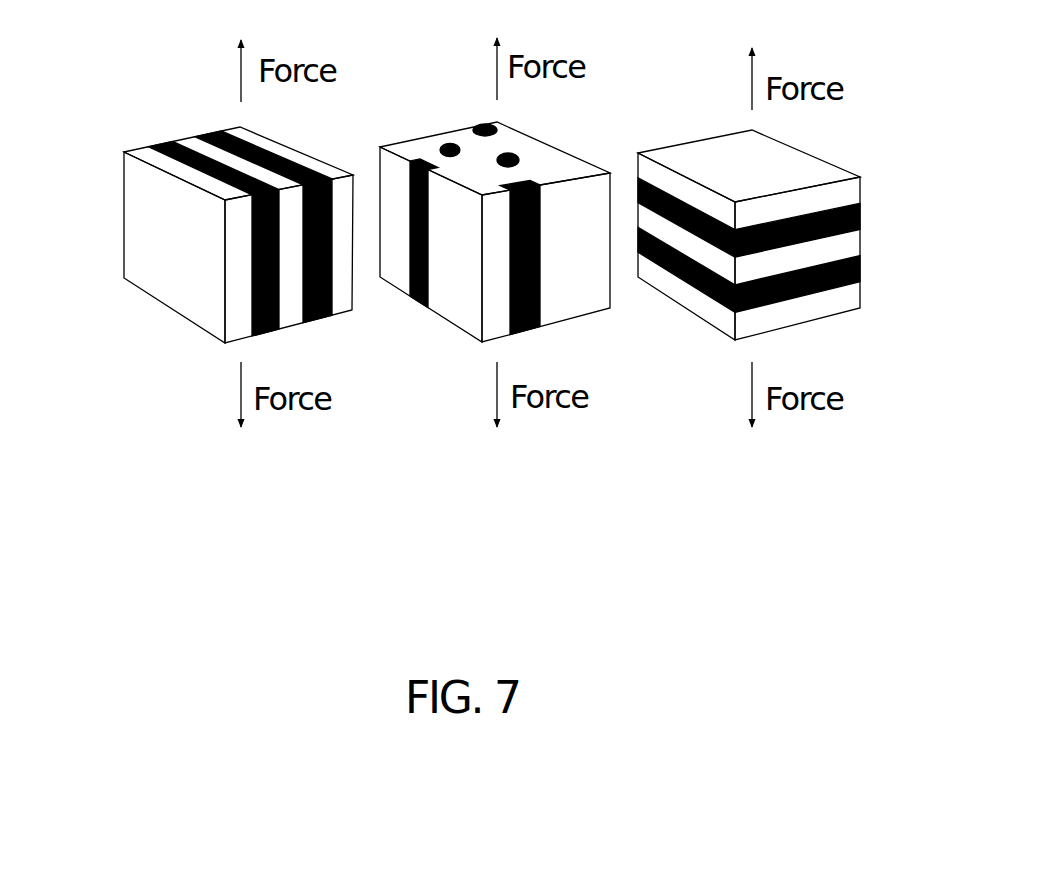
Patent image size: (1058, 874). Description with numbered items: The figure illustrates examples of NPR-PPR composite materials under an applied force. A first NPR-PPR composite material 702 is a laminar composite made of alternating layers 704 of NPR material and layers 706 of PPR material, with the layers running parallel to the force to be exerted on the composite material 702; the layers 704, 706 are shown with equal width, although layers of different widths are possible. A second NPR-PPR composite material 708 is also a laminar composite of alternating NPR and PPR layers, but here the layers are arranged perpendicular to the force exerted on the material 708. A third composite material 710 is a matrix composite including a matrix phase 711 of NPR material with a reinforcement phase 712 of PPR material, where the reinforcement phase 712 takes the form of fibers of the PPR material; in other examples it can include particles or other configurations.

The NPR-PPR composite material 702 is at (219, 229).
The layers of NPR material 704 is at (320, 320).
The layers of PPR material 706 is at (145, 147).
The NPR-PPR composite material 708 is at (893, 298).
The second stack with electrode strips and vias 710 is at (520, 227).
The matrix phase 711 is at (428, 150).
The reinforcement phase 712 is at (518, 158).